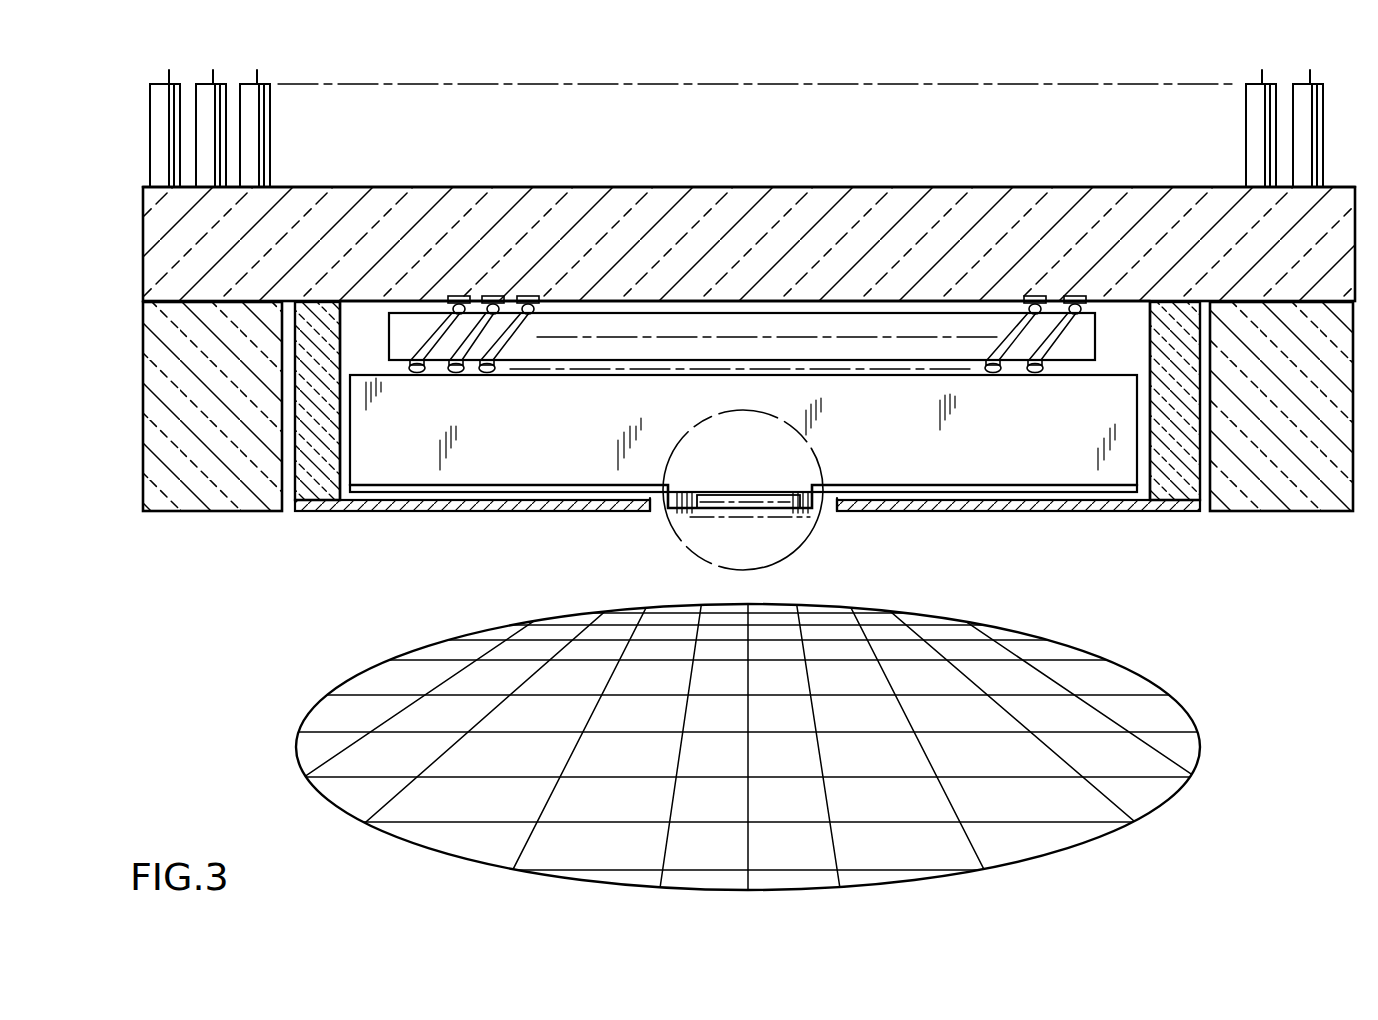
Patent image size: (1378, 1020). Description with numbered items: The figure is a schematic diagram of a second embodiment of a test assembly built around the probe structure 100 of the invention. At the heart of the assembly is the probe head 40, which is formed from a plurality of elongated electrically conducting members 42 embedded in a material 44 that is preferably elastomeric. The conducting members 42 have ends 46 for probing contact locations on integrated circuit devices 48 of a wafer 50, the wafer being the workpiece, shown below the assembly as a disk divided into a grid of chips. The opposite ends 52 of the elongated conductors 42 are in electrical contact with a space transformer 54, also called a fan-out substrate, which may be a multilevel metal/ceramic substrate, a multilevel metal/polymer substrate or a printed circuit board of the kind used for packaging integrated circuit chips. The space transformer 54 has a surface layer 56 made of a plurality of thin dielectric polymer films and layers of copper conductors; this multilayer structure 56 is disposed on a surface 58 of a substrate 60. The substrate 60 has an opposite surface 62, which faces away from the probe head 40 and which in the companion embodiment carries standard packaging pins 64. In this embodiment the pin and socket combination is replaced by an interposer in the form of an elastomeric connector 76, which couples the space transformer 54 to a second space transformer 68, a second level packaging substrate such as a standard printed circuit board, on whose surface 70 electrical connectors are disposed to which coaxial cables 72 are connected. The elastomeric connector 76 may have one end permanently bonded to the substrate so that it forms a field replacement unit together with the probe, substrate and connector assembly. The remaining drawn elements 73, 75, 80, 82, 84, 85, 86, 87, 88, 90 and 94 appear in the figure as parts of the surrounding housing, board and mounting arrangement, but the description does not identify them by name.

The probe head 40 is at (815, 510).
The elongated electrically conducting members 42 is at (720, 512).
The elastomeric material 44 is at (678, 510).
The ends 46 is at (793, 512).
The integrated circuit devices 48 is at (986, 648).
The wafer 50 is at (1166, 689).
The opposite ends 52 is at (667, 502).
The space transformer 54 is at (578, 452).
The surface layer 56 is at (836, 505).
The surface 58 is at (573, 500).
The substrate 60 is at (361, 504).
The surface 62 is at (904, 375).
The pins 64 is at (417, 375).
The second space transformer 68 is at (1200, 198).
The surface 70 is at (370, 188).
The coaxial cables 72 is at (222, 138).
The center axis 73 is at (787, 296).
The circuit board 75 is at (533, 304).
The elastomeric connector 76 is at (918, 316).
The housing body 80 is at (1182, 482).
The housing side wall 82 is at (1152, 417).
The housing bottom wall 84 is at (1024, 512).
The conductive vias 85 is at (428, 346).
The upper solder bumps 86 is at (452, 304).
The housing bottom wall 87 is at (500, 512).
The lower solder bumps 88 is at (488, 373).
The clamp block 90 is at (1185, 511).
The test head assembly 94 is at (1321, 527).
The probe structure 100 is at (760, 567).